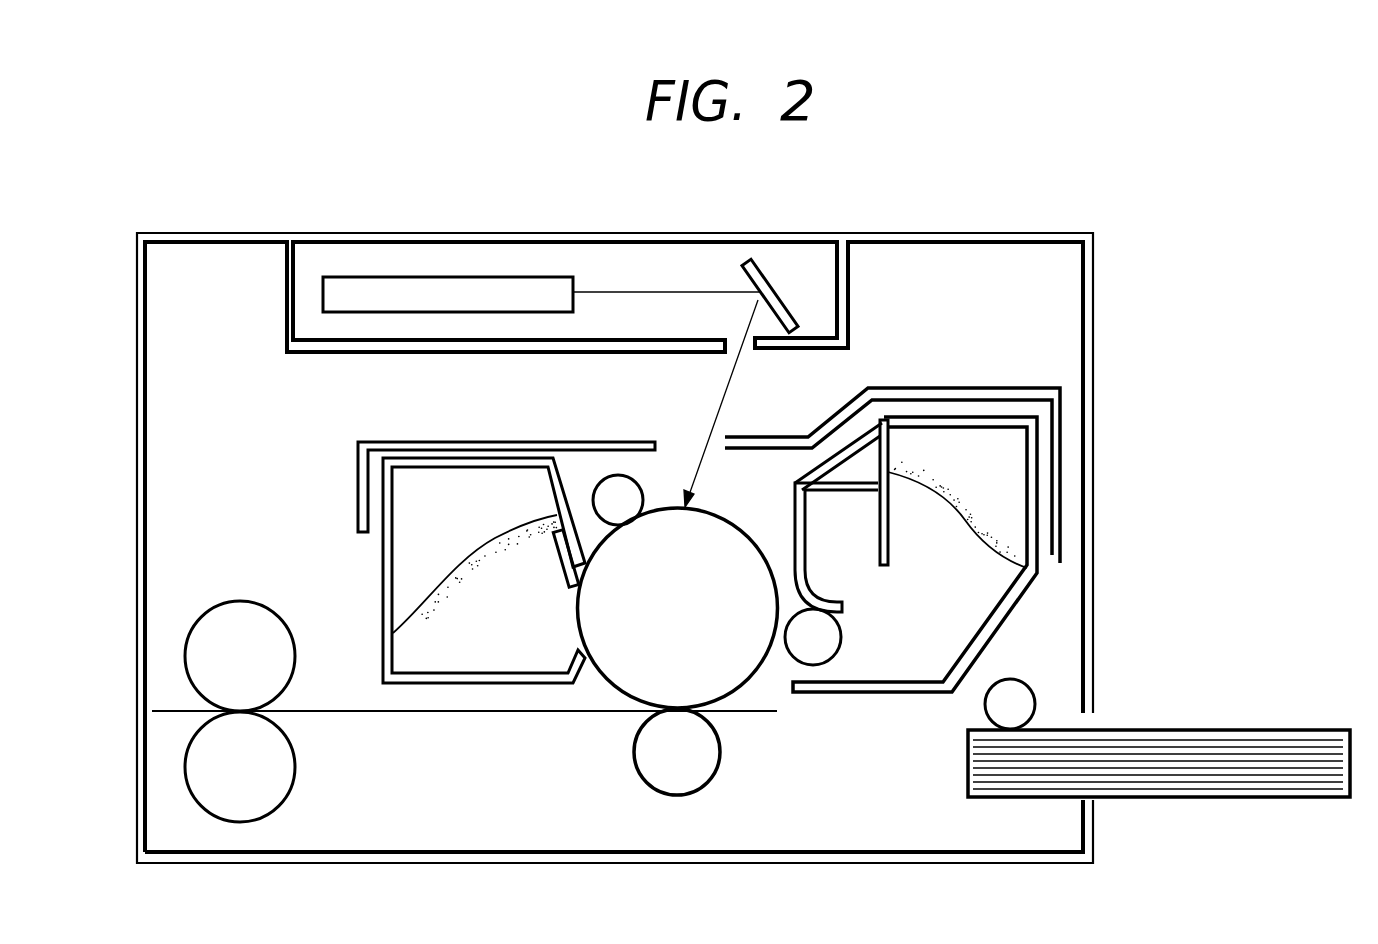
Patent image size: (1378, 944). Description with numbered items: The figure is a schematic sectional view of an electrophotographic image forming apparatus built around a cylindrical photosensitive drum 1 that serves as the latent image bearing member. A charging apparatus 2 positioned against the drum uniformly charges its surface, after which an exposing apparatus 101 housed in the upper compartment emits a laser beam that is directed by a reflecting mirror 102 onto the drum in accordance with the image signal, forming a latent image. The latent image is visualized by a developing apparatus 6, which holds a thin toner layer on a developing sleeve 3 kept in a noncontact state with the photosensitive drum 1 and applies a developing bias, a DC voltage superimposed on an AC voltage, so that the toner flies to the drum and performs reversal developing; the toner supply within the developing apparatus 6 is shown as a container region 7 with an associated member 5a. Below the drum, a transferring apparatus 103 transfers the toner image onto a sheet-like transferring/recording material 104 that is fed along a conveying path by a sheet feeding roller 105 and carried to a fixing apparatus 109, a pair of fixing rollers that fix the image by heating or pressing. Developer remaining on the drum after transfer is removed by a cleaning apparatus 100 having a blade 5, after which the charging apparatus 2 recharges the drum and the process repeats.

The photosensitive drum 1 is at (736, 535).
The charging apparatus 2 is at (637, 486).
The developing sleeve 3 is at (840, 640).
The blade 5 is at (385, 580).
The developing blade 5a is at (562, 568).
The developing apparatus 6 is at (1040, 480).
The waste toner container 7 is at (937, 488).
The cleaning apparatus 100 is at (386, 440).
The exposing apparatus 101 is at (432, 277).
The reflecting mirror 102 is at (760, 268).
The transferring apparatus 103 is at (715, 770).
The transferring/recording material 104 is at (430, 712).
The sheet feeding roller 105 is at (1012, 682).
The fixing apparatus 109 is at (243, 603).